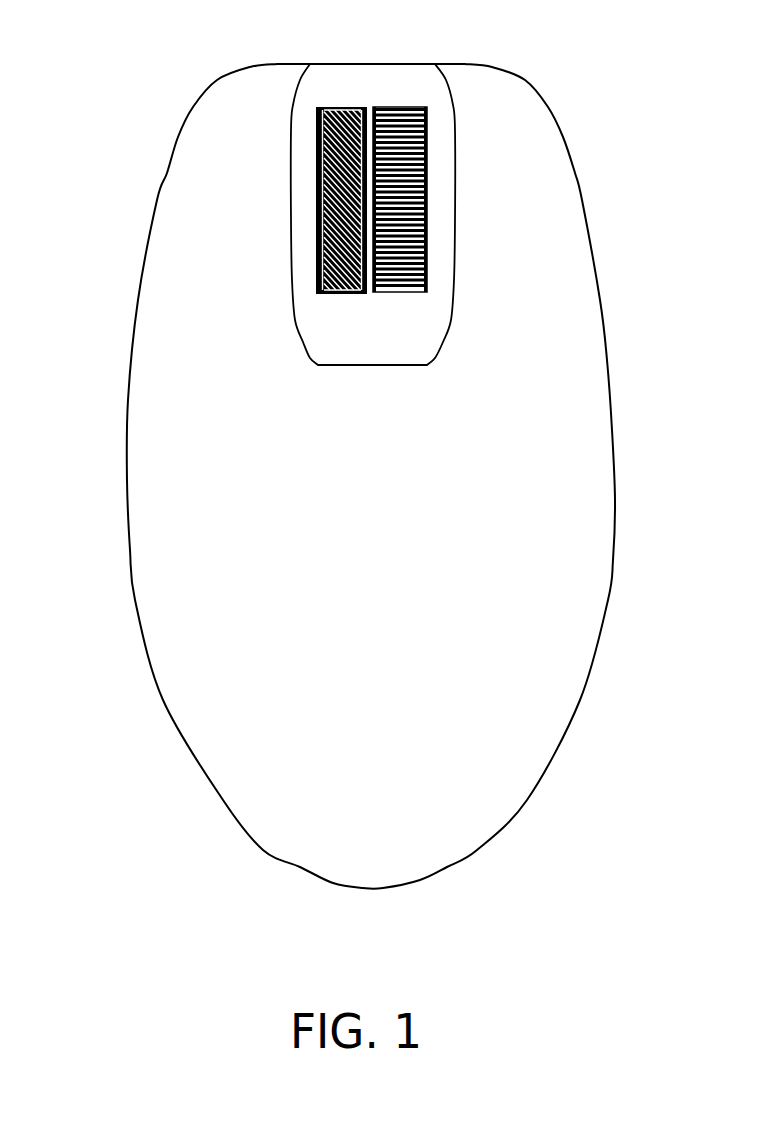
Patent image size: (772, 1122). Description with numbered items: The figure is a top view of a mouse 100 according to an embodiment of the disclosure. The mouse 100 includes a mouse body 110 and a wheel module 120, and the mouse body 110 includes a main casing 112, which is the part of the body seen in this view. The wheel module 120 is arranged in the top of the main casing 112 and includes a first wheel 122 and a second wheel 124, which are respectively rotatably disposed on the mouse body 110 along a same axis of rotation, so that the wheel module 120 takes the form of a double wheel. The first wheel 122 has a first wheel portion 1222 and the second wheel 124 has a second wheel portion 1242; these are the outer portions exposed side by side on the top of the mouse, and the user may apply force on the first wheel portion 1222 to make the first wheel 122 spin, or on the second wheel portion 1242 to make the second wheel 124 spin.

The mouse 100 is at (667, 915).
The mouse body 110 is at (427, 476).
The main casing 112 is at (537, 370).
The wheel module 120 is at (378, 83).
The first wheel 122 is at (199, 200).
The first wheel portion 1222 is at (325, 189).
The second wheel 124 is at (542, 199).
The second wheel portion 1242 is at (410, 190).